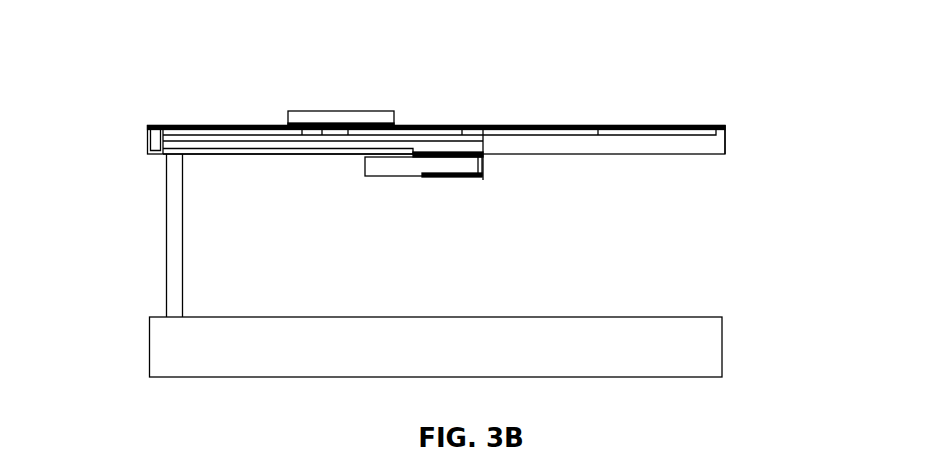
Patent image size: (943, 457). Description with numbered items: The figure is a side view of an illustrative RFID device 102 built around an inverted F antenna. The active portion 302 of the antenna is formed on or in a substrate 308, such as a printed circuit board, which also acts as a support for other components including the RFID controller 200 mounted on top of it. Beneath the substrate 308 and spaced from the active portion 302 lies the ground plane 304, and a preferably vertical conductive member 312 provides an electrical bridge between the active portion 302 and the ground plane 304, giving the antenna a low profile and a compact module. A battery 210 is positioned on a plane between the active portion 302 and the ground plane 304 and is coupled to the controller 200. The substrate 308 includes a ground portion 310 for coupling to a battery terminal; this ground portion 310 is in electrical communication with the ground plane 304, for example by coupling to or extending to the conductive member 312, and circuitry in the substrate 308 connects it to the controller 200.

The RFID device 102 is at (118, 116).
The RFID controller 200 is at (324, 110).
The battery 210 is at (407, 177).
The active portion 302 is at (641, 133).
The ground plane 304 is at (723, 340).
The substrate 308 is at (727, 141).
The ground portion 310 is at (265, 155).
The conductive member 312 is at (166, 222).